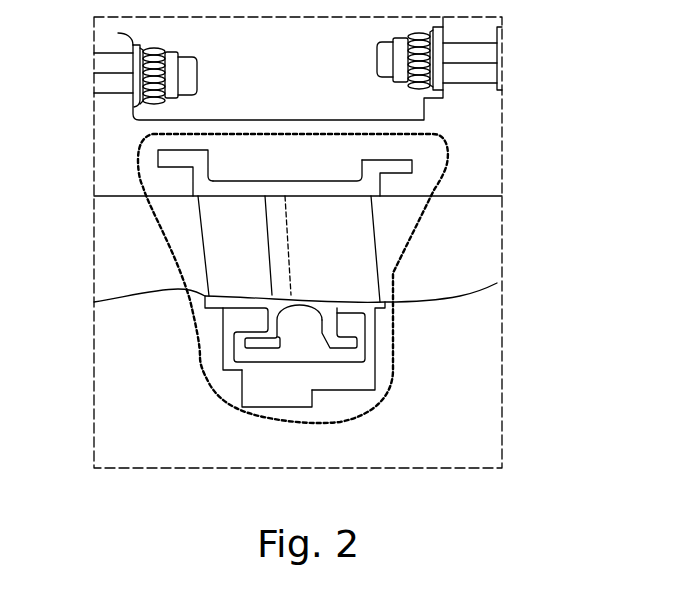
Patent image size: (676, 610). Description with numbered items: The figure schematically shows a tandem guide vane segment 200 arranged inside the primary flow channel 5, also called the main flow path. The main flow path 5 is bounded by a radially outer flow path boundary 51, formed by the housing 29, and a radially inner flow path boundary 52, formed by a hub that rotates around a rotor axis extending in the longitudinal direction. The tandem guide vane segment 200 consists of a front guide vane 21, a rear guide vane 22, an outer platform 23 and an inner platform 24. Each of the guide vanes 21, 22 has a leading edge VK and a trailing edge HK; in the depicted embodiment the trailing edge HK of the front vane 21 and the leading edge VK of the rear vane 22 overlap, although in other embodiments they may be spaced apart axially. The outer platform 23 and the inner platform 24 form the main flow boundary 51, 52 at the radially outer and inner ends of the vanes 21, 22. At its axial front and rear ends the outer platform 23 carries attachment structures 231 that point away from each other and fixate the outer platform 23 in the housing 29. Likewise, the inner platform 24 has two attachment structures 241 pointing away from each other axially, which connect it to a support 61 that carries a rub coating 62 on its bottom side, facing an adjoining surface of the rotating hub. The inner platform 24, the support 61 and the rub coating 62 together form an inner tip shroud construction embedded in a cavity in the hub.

The primary flow channel 5 is at (153, 262).
The front guide vane 21 is at (257, 269).
The rear guide vane 22 is at (354, 254).
The outer platform 23 is at (237, 192).
The inner platform 24 is at (272, 315).
The housing 29 is at (425, 119).
The radially outer flow path boundary 51 is at (473, 197).
The radially inner flow path boundary 52 is at (497, 283).
The support 61 is at (240, 323).
The rub coating 62 is at (258, 388).
The tandem guide vane segment 200 is at (304, 170).
The attachment structures 231 is at (410, 160).
The attachment structures 241 is at (347, 349).
The leading edge VK is at (203, 217).
The trailing edge HK is at (289, 205).